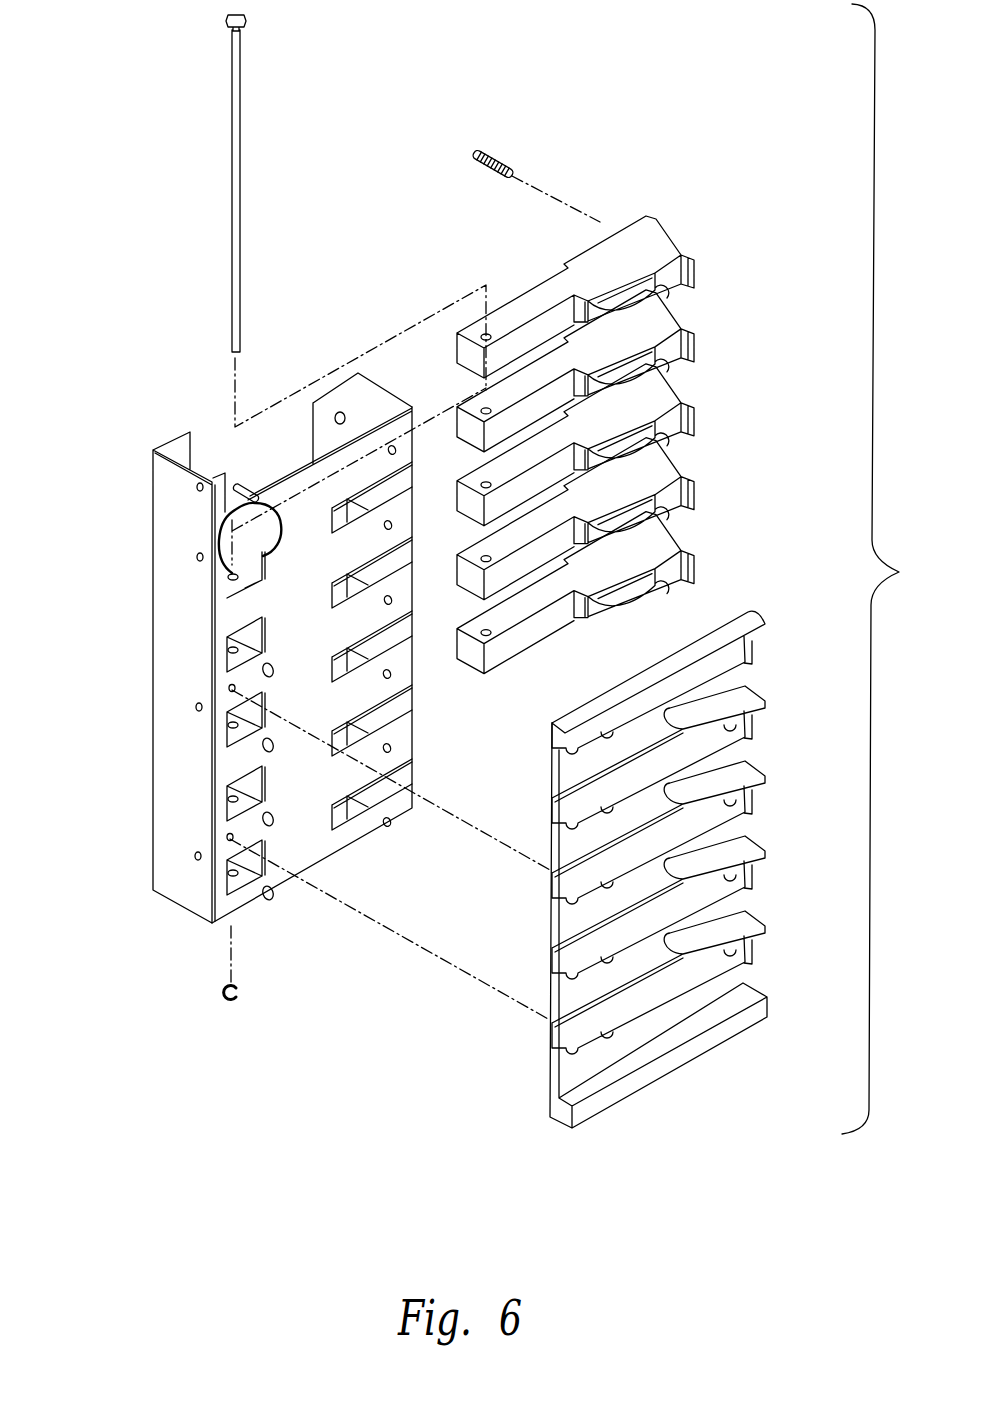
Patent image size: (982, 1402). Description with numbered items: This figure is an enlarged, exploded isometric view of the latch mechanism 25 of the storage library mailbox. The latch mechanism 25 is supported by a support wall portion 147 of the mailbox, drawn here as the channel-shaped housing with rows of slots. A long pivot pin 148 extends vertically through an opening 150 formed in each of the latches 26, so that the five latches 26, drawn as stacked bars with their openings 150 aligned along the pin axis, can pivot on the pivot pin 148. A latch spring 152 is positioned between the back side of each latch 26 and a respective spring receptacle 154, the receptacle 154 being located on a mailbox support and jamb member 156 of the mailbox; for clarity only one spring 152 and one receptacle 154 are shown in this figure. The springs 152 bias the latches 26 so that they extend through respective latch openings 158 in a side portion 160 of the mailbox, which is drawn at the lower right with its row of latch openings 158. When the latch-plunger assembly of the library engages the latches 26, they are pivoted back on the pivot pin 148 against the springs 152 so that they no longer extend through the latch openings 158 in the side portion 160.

The latch mechanism 25 is at (411, 164).
The latch 26 is at (684, 257).
The support wall portion 147 is at (322, 858).
The pivot pin 148 is at (242, 58).
The opening 150 is at (483, 336).
The latch spring 152 is at (508, 160).
The spring receptacle 154 is at (341, 412).
The mailbox support and jamb member 156 is at (175, 545).
The latch opening 158 is at (753, 670).
The side portion 160 is at (548, 1070).